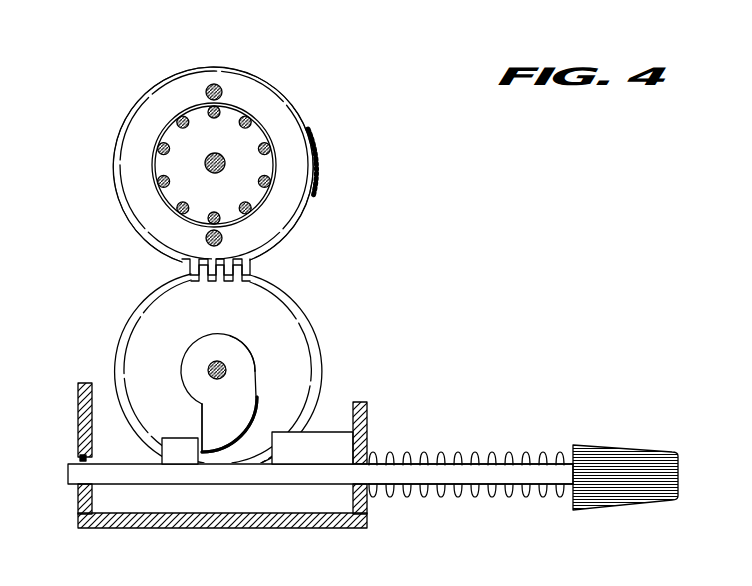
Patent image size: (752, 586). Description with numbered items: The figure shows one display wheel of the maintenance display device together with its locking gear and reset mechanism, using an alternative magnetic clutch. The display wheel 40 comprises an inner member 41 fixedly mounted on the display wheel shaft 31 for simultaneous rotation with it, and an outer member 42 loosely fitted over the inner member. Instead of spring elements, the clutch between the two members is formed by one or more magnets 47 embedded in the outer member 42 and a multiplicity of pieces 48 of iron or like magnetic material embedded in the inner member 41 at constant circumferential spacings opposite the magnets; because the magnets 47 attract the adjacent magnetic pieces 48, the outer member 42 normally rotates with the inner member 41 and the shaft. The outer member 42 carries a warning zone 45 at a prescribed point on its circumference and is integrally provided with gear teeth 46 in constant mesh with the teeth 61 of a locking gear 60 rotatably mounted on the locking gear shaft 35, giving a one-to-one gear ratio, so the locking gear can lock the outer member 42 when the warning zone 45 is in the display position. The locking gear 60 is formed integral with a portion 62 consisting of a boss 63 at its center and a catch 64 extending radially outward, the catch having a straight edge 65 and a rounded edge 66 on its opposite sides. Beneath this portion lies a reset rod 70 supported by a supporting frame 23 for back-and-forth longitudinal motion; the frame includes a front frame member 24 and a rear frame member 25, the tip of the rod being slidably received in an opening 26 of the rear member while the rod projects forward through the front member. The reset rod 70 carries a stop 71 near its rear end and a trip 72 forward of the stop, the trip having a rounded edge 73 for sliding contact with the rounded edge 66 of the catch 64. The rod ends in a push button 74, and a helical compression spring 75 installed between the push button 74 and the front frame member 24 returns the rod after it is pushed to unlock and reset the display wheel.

The supporting frame 23 is at (372, 520).
The front frame member 24 is at (365, 408).
The rear frame member 25 is at (82, 412).
The opening 26 is at (74, 458).
The display wheel shaft 31 is at (221, 152).
The locking gear shaft 35 is at (228, 370).
The display wheel 40 is at (224, 83).
The inner member 41 is at (198, 130).
The outer member 42 is at (152, 106).
The warning zone 45 is at (318, 142).
The gear teeth 46 is at (116, 153).
The magnets 47 is at (213, 84).
The magnetic pieces 48 is at (246, 212).
The locking gear 60 is at (156, 316).
The teeth 61 is at (250, 356).
The portion 62 is at (240, 355).
The boss 63 is at (236, 334).
The catch 64 is at (220, 433).
The straight edge 65 is at (200, 427).
The rounded edge 66 is at (250, 428).
The reset rod 70 is at (472, 480).
The stop 71 is at (176, 455).
The trip 72 is at (340, 445).
The rounded edge 73 is at (277, 435).
The push button 74 is at (624, 490).
The helical compression spring 75 is at (495, 455).